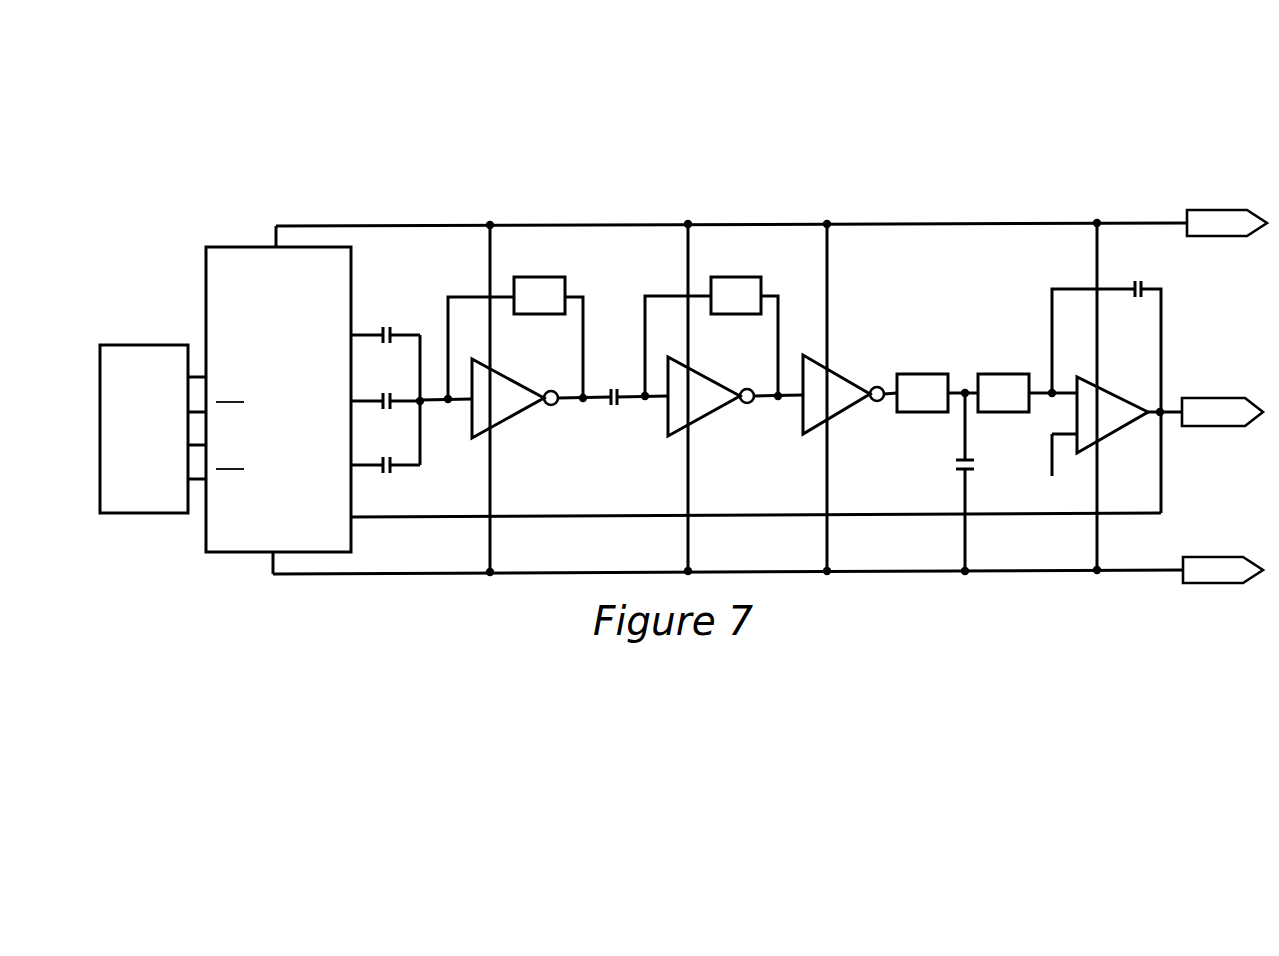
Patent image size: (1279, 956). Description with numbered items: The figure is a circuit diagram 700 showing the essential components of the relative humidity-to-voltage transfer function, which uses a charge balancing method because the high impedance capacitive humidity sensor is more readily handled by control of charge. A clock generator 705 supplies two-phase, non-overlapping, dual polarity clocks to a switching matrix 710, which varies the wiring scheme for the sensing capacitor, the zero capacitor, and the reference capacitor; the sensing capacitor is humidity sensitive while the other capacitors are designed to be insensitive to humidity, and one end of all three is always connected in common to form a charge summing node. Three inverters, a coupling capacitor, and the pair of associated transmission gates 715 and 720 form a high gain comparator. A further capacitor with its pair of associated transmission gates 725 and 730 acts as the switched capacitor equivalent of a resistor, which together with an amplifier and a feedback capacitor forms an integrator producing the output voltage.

The circuit diagram 700 is at (223, 92).
The clock generator 705 is at (145, 345).
The switching matrix 710 is at (243, 247).
The transmission gate 715 is at (540, 276).
The transmission gate 720 is at (757, 276).
The transmission gate 725 is at (930, 373).
The transmission gate 730 is at (1002, 373).